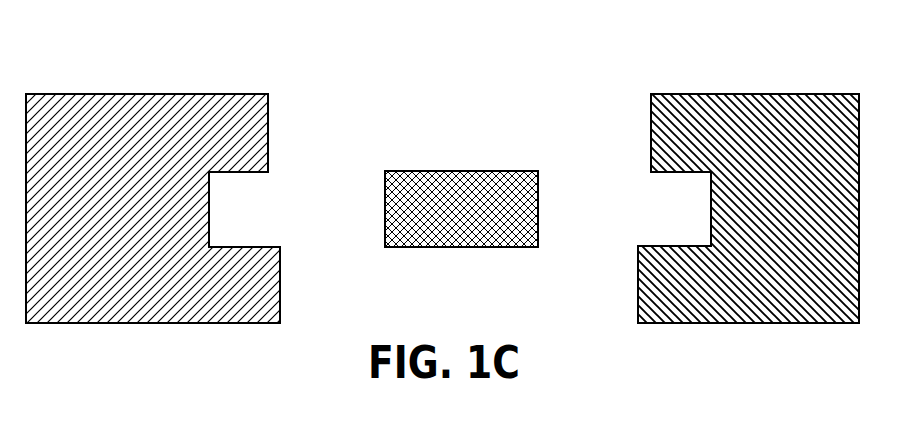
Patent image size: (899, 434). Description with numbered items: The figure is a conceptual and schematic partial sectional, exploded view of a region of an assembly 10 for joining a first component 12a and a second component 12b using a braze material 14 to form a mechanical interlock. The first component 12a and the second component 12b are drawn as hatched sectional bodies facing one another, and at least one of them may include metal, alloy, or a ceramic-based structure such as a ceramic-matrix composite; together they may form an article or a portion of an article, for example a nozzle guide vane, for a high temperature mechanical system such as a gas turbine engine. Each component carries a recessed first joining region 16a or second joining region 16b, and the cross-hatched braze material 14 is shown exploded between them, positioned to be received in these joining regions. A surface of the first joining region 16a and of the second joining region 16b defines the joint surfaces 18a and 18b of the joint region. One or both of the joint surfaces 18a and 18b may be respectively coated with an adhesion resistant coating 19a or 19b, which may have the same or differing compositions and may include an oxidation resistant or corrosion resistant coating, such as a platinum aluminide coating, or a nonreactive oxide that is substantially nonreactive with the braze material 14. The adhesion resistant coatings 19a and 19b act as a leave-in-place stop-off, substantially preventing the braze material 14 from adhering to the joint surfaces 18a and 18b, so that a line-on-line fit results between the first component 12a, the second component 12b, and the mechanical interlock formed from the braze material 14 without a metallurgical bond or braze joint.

The assembly 10 is at (74, 58).
The first component 12a is at (92, 323).
The second component 12b is at (770, 323).
The braze material 14 is at (458, 171).
The first joining region 16a is at (290, 170).
The second joining region 16b is at (625, 170).
The joint surface 18a is at (247, 182).
The joint surface 18b is at (671, 182).
The adhesion resistant coating 19a is at (245, 247).
The adhesion resistant coating 19b is at (670, 246).